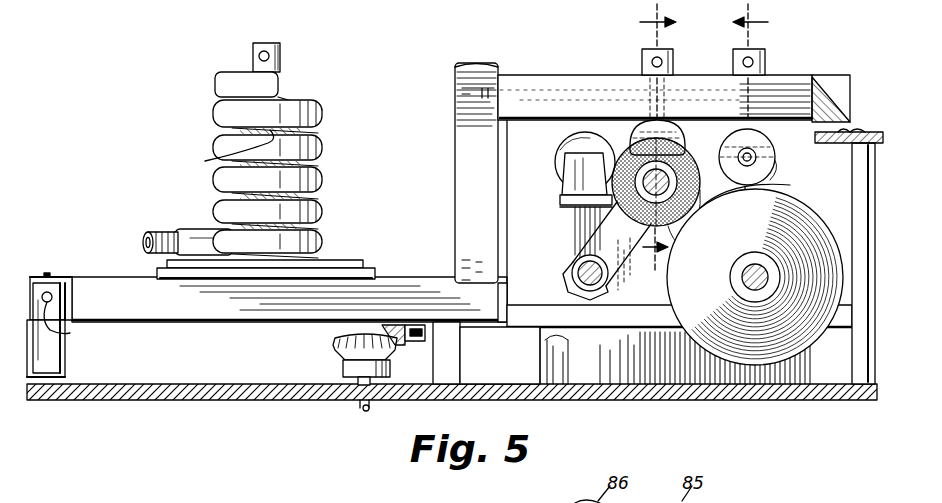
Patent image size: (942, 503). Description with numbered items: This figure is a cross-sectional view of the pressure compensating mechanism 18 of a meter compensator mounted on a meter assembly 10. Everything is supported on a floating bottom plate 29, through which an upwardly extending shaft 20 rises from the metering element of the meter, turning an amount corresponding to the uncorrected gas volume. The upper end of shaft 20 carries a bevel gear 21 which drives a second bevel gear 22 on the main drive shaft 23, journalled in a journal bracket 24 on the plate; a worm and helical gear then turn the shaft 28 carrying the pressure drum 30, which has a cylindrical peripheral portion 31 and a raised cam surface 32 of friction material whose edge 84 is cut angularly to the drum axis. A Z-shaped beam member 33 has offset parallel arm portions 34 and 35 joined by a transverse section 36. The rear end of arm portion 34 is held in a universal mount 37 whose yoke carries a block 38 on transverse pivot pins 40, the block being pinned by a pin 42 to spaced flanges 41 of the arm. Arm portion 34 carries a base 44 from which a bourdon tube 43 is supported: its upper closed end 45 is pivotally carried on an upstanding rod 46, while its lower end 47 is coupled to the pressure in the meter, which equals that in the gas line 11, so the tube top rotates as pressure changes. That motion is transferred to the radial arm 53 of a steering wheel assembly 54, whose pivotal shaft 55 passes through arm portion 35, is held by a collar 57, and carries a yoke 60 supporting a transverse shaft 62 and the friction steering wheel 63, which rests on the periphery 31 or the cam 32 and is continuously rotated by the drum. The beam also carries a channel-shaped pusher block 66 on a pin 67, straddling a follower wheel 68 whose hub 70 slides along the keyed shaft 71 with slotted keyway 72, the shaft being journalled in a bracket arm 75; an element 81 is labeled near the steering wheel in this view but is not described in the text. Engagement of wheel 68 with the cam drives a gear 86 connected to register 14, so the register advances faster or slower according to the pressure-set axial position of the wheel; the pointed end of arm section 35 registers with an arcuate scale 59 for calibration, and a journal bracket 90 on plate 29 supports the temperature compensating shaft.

The register 14 is at (550, 181).
The pressure compensating mechanism 18 is at (209, 150).
The shaft 20 is at (362, 409).
The bevel gear 21 is at (340, 347).
The second bevel gear 22 is at (409, 342).
The main drive shaft 23 is at (516, 331).
The journal bracket 24 is at (447, 357).
The shaft 28 is at (742, 280).
The floating bottom plate 29 is at (73, 401).
The pressure drum 30 is at (768, 355).
The peripheral portion 31 is at (826, 334).
The raised cam surface 32 is at (677, 321).
The Z-shaped beam member 33 is at (477, 64).
The arm portion 34 is at (226, 312).
The arm portion 35 is at (566, 86).
The transverse section 36 is at (468, 200).
The universal mount 37 is at (87, 349).
The block 38 is at (51, 284).
The transverse pivot pins 40 is at (72, 333).
The spaced flanges 41 is at (64, 281).
The pin 42 is at (47, 273).
The bourdon tube 43 is at (323, 107).
The base 44 is at (366, 259).
The upper closed end 45 is at (255, 92).
The upstanding rod 46 is at (226, 153).
The lower end 47 is at (205, 240).
The radial arm 53 is at (765, 66).
The steering wheel assembly 54 is at (790, 73).
The pivotal shaft 55 is at (749, 98).
The collar 57 is at (735, 55).
The arcuate scale 59 is at (856, 131).
The yoke 60 is at (776, 150).
The transverse shaft 62 is at (773, 167).
The steering wheel 63 is at (756, 186).
The pusher block 66 is at (645, 128).
The pin 67 is at (652, 95).
The follower wheel 68 is at (681, 210).
The hub 70 is at (668, 244).
The shaft 71 is at (626, 262).
The slotted keyway 72 is at (690, 183).
The bracket arm 75 is at (594, 252).
The link end 81 is at (760, 196).
The edge 84 is at (750, 382).
The gear 86 is at (573, 150).
The journal bracket 90 is at (675, 355).
The meter assembly 10 is at (645, 149).
The gas line 11 is at (762, 124).